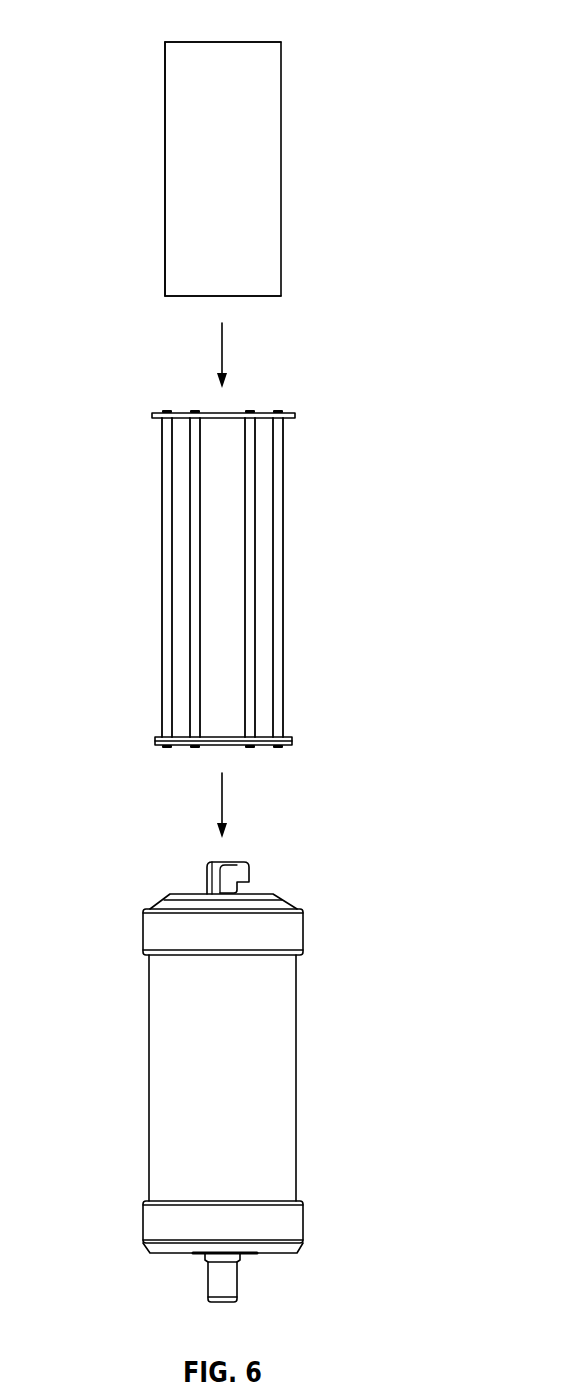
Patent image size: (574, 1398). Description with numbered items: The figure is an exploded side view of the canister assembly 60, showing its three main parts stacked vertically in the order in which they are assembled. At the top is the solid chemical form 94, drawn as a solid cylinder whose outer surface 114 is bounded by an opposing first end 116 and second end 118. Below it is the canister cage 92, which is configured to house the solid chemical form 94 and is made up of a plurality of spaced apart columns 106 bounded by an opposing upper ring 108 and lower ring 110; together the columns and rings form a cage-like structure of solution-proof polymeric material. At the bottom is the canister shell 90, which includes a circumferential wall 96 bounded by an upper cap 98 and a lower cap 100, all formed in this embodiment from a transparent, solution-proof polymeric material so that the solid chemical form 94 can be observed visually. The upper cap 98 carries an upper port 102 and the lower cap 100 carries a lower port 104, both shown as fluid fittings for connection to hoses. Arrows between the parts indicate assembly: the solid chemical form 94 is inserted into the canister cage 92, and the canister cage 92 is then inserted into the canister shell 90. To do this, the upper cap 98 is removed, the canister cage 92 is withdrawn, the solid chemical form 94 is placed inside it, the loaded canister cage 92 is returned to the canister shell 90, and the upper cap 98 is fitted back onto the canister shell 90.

The canister assembly 60 is at (372, 37).
The canister shell 90 is at (296, 1077).
The canister cage 92 is at (287, 690).
The solid chemical form 94 is at (281, 170).
The circumferential wall 96 is at (149, 1077).
The upper cap 98 is at (143, 930).
The lower cap 100 is at (143, 1220).
The upper port 102 is at (207, 885).
The lower port 104 is at (208, 1278).
The spaced apart columns 106 is at (195, 507).
The upper ring 108 is at (152, 416).
The lower ring 110 is at (155, 740).
The outer surface 114 is at (165, 170).
The first end 116 is at (252, 296).
The second end 118 is at (223, 42).